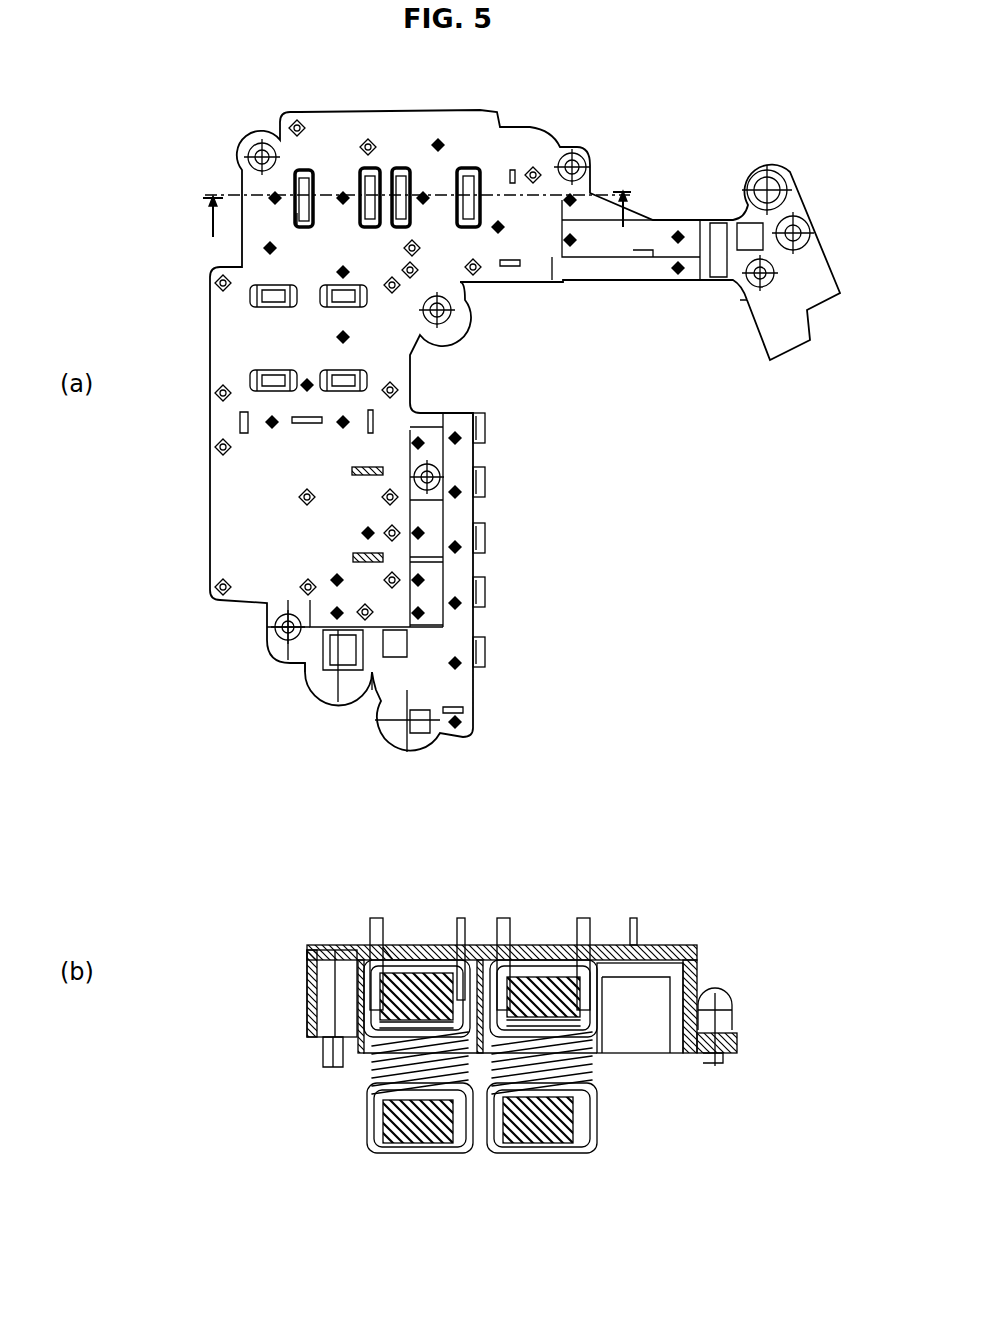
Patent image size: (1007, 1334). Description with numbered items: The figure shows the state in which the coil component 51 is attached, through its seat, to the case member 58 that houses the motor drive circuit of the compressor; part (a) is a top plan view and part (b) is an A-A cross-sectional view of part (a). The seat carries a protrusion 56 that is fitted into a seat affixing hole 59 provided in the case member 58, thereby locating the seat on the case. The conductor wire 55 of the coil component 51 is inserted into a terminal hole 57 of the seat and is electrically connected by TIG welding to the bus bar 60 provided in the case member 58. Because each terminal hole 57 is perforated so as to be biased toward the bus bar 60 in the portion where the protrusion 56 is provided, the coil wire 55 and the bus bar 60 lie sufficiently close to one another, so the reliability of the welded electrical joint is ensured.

The coil component 51 is at (407, 1153).
The conductor wire 55 is at (297, 215).
The protrusion 56 is at (306, 196).
The terminal hole 57 is at (301, 173).
The case member 58 is at (631, 511).
The seat affixing hole 59 is at (388, 951).
The bus bar 60 is at (295, 187).